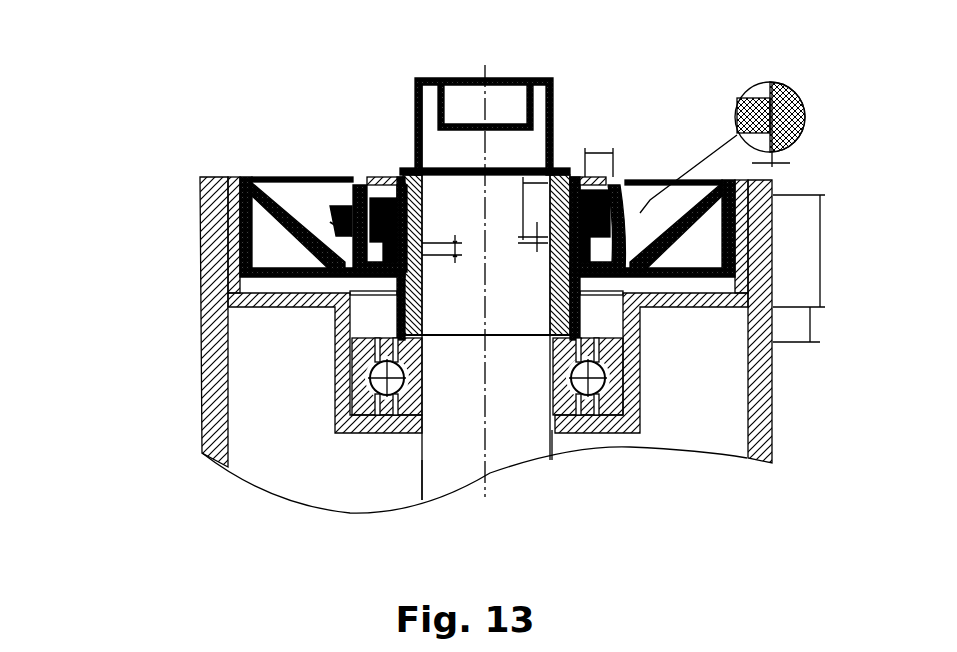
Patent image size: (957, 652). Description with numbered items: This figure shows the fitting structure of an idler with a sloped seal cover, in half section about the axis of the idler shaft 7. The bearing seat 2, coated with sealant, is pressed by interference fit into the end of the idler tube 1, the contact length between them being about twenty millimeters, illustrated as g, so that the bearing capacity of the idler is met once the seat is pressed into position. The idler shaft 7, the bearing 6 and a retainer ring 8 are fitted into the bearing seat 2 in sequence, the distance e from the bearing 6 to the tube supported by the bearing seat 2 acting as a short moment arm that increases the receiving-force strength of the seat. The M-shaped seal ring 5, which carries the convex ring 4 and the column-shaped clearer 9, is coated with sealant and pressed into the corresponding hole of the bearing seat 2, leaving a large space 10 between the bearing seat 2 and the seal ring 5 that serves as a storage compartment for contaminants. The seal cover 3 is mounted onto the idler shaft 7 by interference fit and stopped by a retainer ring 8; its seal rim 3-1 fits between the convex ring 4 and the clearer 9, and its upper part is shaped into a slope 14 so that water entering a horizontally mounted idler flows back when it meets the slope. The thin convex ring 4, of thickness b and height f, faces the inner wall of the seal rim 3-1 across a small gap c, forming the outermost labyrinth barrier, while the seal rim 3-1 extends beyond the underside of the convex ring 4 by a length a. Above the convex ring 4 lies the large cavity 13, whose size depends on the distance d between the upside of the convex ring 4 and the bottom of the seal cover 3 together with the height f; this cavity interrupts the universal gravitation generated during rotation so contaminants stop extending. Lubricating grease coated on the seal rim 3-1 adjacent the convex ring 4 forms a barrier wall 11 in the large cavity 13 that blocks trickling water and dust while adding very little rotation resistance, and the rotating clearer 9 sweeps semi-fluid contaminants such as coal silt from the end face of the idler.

The idler tube 1 is at (200, 368).
The bearing seat 2 is at (228, 288).
The seal cover 3 is at (382, 190).
The seal rim 3-1 is at (330, 232).
The convex ring 4 is at (357, 198).
The seal ring 5 is at (238, 203).
The bearing 6 is at (333, 392).
The idler shaft 7 is at (448, 462).
The retainer ring 8 is at (413, 78).
The clearer 9 is at (328, 208).
The space 10 is at (693, 257).
The barrier wall 11 is at (325, 210).
The large cavity 13 is at (603, 190).
The slope 14 is at (622, 205).
The length beyond the convex ring a is at (442, 253).
The thickness of the convex ring b is at (526, 242).
The gap between the convex ring and the seal cover c is at (722, 147).
The distance between the upside of the convex ring and the bottom of the seal cover d is at (520, 208).
The distance from the bearing to the steel tube e is at (796, 324).
The height of the convex ring f is at (599, 153).
The contact length between the bearing seat and the idler tube g is at (799, 251).